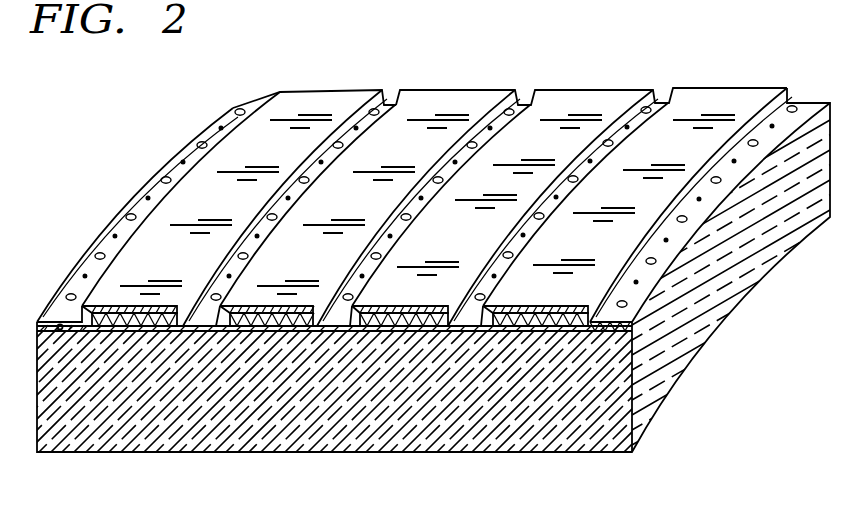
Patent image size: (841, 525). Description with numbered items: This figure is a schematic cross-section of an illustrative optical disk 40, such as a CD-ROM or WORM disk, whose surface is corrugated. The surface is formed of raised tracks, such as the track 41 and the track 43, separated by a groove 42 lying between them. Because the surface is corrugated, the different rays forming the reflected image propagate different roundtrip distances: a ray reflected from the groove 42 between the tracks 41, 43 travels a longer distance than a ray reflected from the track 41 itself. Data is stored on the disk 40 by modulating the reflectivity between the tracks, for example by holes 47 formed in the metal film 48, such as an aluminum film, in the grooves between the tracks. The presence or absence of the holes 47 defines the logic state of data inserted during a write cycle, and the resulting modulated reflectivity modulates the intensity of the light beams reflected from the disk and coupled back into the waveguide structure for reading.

The optical disk 40 is at (467, 249).
The track 41 is at (563, 294).
The groove 42 is at (483, 320).
The track 43 is at (420, 294).
The holes 47 is at (237, 116).
The metal film 48 is at (265, 312).